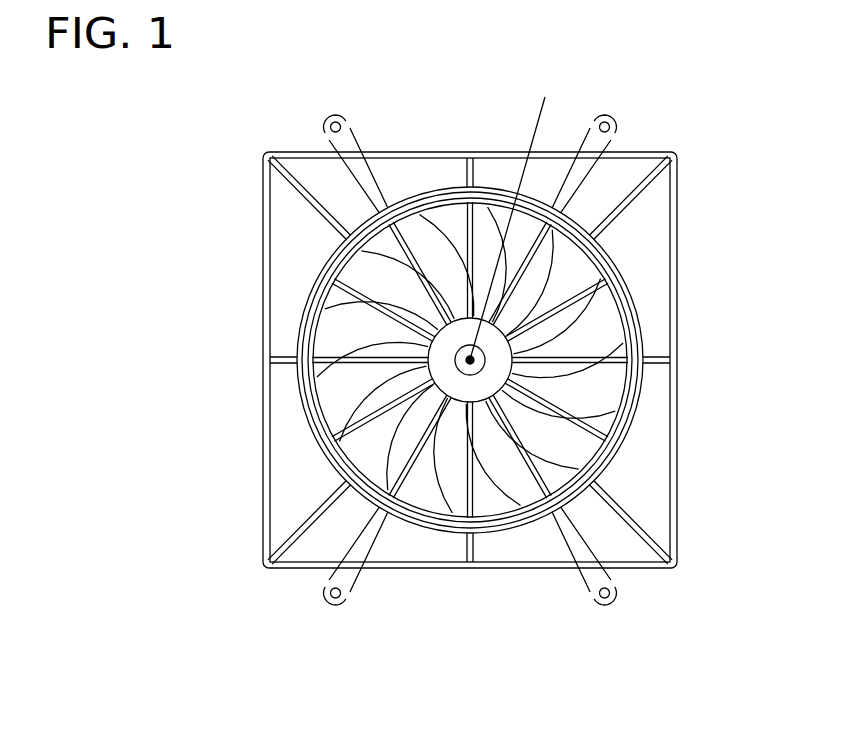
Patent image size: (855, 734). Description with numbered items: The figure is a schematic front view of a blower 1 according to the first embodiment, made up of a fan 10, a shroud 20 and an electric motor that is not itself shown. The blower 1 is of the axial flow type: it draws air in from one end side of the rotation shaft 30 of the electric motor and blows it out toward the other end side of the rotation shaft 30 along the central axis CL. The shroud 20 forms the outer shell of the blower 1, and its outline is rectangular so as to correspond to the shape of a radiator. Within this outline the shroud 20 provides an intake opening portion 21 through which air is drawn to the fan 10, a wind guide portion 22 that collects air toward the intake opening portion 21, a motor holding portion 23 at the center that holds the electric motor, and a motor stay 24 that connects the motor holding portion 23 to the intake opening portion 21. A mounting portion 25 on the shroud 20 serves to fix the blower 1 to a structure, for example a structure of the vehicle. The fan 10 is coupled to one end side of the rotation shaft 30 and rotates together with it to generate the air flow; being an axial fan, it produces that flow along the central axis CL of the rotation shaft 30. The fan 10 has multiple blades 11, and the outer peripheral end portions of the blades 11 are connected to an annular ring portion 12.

The blower 1 is at (706, 157).
The fan 10 is at (452, 242).
The blades 11 is at (382, 275).
The annular ring portion 12 is at (478, 318).
The shroud 20 is at (657, 145).
The intake opening portion 21 is at (612, 248).
The wind guide portion 22 is at (652, 263).
The motor holding portion 23 is at (570, 334).
The motor stay 24 is at (645, 346).
The mounting portion 25 is at (598, 535).
The rotation shaft 30 is at (455, 355).
The central axis CL is at (513, 212).